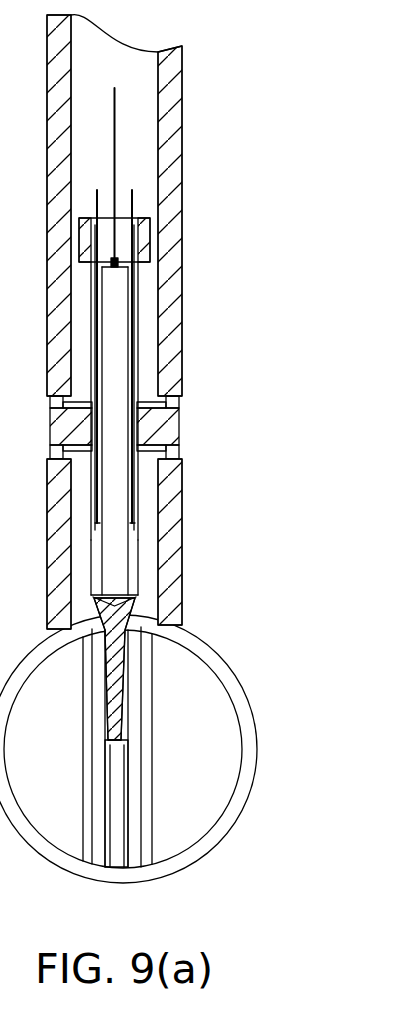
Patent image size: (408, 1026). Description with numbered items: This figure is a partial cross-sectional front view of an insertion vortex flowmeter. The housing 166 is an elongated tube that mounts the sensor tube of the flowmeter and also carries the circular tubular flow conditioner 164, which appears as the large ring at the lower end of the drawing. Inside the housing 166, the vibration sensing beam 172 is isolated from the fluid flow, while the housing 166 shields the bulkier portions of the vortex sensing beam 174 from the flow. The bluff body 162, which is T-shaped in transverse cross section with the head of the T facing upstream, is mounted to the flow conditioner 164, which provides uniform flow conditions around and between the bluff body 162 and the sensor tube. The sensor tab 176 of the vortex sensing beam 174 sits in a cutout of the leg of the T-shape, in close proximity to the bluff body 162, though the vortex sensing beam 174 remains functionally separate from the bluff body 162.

The bluff body 162 is at (153, 808).
The circular tubular flow conditioner 164 is at (251, 780).
The housing 166 is at (182, 295).
The vibration sensing beam 172 is at (140, 351).
The vortex sensing beam 174 is at (140, 570).
The sensor tab 176 is at (120, 690).